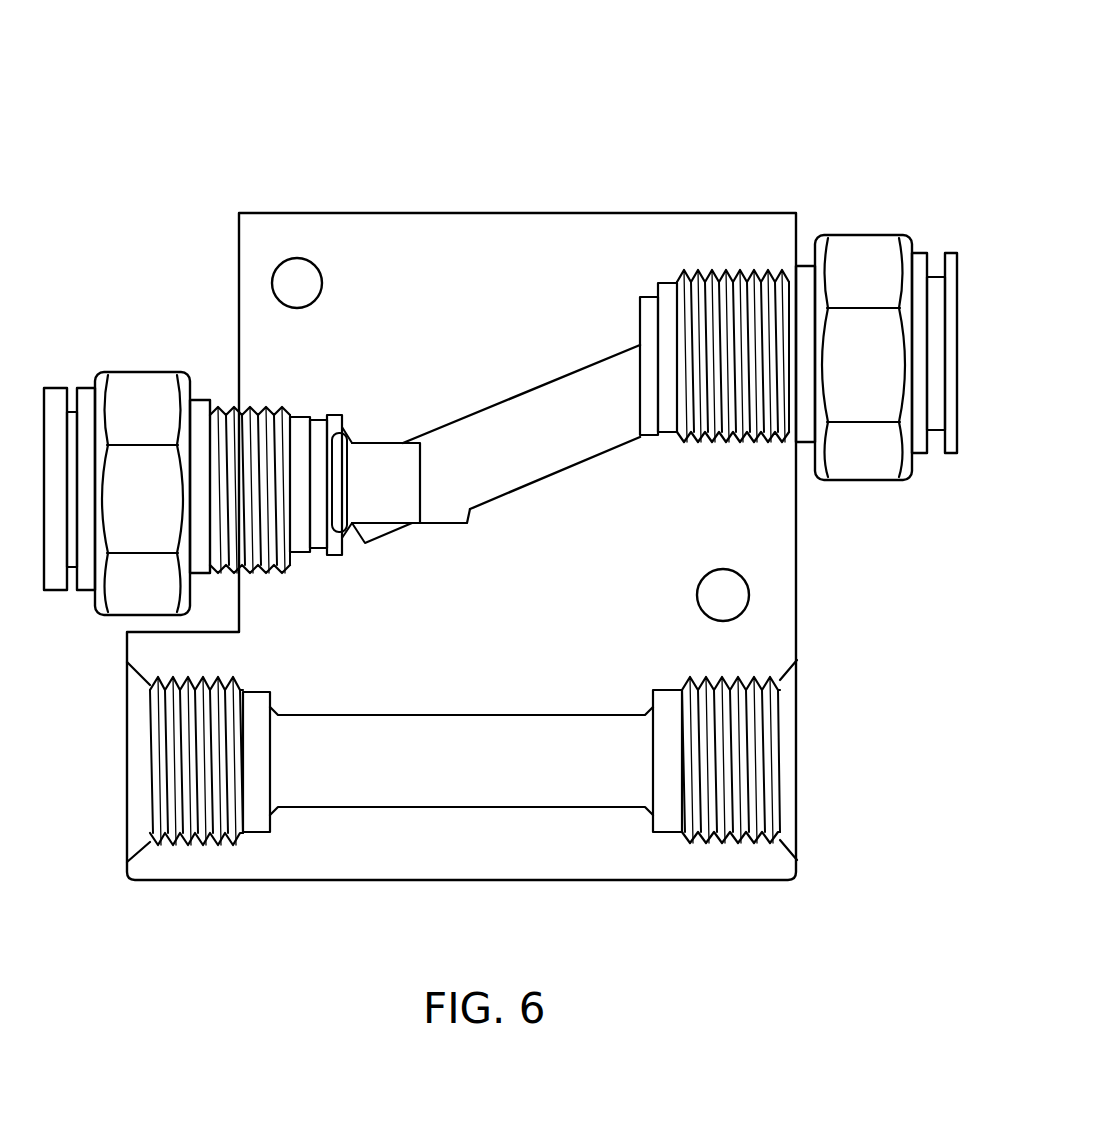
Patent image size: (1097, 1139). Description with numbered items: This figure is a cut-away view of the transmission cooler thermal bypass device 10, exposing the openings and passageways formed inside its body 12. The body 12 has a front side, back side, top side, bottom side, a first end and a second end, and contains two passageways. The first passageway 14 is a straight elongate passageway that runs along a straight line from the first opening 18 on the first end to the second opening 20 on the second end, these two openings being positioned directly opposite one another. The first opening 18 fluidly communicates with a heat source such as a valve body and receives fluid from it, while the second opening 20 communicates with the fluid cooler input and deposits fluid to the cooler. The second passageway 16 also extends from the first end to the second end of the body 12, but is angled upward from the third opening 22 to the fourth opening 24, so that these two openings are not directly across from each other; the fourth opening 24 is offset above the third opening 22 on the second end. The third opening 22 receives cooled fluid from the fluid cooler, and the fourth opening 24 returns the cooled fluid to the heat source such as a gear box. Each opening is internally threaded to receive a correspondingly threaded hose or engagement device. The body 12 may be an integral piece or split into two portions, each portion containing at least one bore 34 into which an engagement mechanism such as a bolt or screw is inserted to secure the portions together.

The transmission cooler thermal bypass device 10 is at (522, 108).
The body 12 is at (522, 262).
The first passageway 14 is at (480, 777).
The second passageway 16 is at (553, 443).
The first opening 18 is at (737, 748).
The second opening 20 is at (200, 835).
The third opening 22 is at (230, 413).
The fourth opening 24 is at (717, 270).
The bore 34 is at (295, 273).